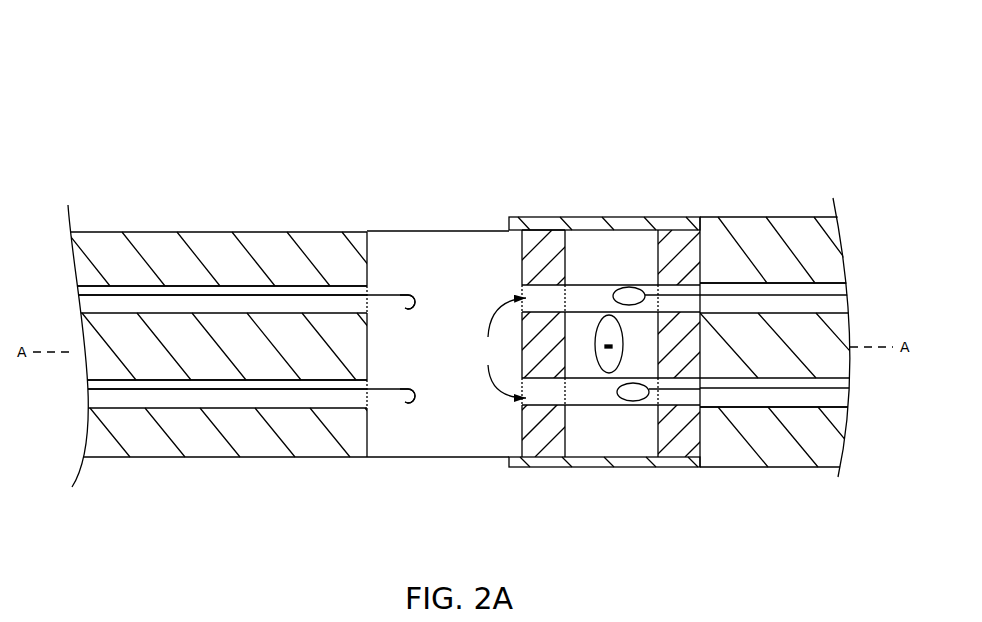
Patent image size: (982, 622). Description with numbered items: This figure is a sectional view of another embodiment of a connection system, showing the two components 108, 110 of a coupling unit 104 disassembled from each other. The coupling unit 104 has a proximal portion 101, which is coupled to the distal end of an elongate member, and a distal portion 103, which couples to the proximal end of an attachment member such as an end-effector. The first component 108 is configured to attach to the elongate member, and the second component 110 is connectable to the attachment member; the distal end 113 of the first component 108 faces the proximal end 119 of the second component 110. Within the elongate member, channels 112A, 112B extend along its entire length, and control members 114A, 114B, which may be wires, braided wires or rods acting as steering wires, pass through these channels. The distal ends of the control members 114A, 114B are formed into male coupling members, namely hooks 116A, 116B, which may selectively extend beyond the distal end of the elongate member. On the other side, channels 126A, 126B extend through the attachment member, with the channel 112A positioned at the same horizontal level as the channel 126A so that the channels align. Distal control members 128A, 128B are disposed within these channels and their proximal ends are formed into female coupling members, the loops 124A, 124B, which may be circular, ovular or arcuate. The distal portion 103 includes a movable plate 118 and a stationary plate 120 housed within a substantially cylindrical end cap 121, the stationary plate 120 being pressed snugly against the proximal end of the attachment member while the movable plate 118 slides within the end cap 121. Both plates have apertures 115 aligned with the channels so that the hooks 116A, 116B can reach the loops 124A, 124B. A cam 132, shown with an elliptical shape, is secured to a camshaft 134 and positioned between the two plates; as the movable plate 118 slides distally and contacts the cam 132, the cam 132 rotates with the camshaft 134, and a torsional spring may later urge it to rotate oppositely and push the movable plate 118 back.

The proximal portion 101 is at (86, 232).
The distal portion 103 is at (831, 217).
The coupling unit 104 is at (260, 68).
The first component 108 is at (115, 125).
The second component 110 is at (780, 121).
The channel 112A is at (185, 289).
The channel 112B is at (170, 398).
The distal end 113 is at (347, 232).
The control member 114A is at (280, 292).
The control member 114B is at (308, 391).
The apertures 115 is at (500, 348).
The hook 116A is at (417, 290).
The hook 116B is at (415, 408).
The movable plate 118 is at (542, 231).
The proximal end 119 is at (545, 229).
The stationary plate 120 is at (683, 458).
The end cap 121 is at (517, 214).
The loop 124A is at (630, 286).
The loop 124B is at (645, 404).
The channel 126A is at (777, 286).
The channel 126B is at (790, 401).
The distal control member 128A is at (708, 291).
The distal control member 128B is at (728, 394).
The cam 132 is at (603, 376).
The camshaft 134 is at (608, 341).